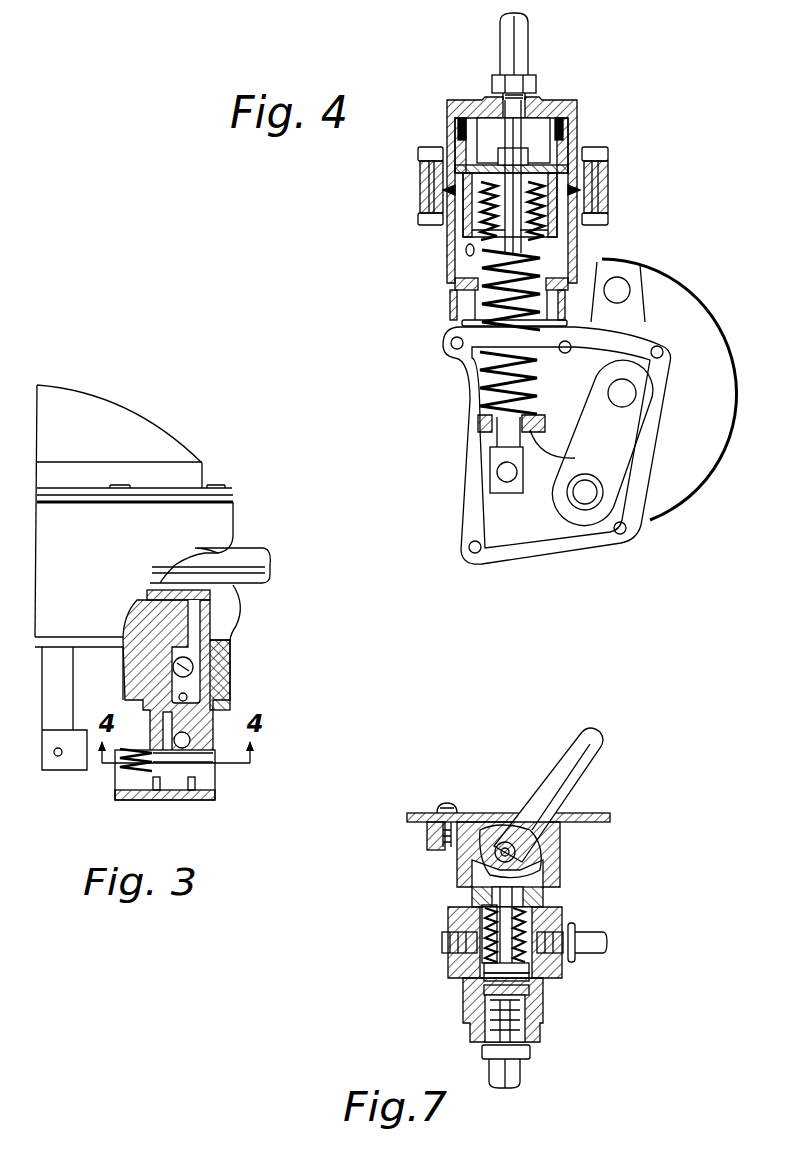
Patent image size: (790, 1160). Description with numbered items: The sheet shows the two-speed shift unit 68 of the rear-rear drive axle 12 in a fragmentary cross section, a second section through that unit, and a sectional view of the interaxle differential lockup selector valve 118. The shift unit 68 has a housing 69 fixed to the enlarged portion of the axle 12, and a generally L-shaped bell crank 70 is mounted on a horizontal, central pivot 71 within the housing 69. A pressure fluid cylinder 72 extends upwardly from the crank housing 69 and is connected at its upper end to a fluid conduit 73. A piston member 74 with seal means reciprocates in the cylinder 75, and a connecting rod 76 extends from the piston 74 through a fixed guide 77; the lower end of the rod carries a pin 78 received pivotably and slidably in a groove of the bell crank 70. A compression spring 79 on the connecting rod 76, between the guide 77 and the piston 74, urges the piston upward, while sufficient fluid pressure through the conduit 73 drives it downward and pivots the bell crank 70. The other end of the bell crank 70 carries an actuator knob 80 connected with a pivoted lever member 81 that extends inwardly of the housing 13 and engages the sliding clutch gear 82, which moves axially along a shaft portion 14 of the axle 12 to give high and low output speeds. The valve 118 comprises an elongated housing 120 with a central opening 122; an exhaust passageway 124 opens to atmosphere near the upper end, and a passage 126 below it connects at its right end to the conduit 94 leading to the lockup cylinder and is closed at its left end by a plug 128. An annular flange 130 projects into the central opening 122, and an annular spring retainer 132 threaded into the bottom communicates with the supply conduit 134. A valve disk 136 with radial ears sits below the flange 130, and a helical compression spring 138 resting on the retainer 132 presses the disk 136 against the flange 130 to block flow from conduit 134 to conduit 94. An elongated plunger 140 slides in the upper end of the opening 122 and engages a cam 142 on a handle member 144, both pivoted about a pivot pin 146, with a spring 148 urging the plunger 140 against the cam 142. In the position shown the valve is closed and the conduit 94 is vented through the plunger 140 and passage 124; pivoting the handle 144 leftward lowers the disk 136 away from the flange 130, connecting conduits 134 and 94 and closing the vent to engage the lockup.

In FIG. 3, the rear-rear drive axle 12 is at (162, 423).
In FIG. 3, the housing 13 is at (222, 515).
In FIG. 3, the shaft portion 14 is at (248, 553).
In FIG. 4, the shift unit 68 is at (614, 172).
In FIG. 3, the shift unit 68 is at (108, 793).
In FIG. 4, the housing 69 is at (470, 388).
In FIG. 3, the housing 69 is at (212, 730).
In FIG. 4, the bell crank 70 is at (615, 453).
In FIG. 4, the pivot 71 is at (588, 500).
In FIG. 4, the pressure fluid cylinder 72 is at (578, 115).
In FIG. 4, the fluid conduit 73 is at (530, 42).
In FIG. 4, the piston member 74 is at (556, 157).
In FIG. 4, the cylinder 75 is at (560, 236).
In FIG. 4, the connecting rod 76 is at (470, 245).
In FIG. 4, the fixed guide 77 is at (480, 425).
In FIG. 4, the pin 78 is at (496, 478).
In FIG. 4, the compression spring 79 is at (452, 289).
In FIG. 3, the actuator knob 80 is at (215, 765).
In FIG. 3, the lever member 81 is at (198, 652).
In FIG. 3, the sliding clutch gear 82 is at (210, 596).
In FIG. 7, the conduit 94 is at (604, 947).
In FIG. 7, the valve 118 is at (568, 900).
In FIG. 7, the housing 120 is at (563, 918).
In FIG. 7, the central opening 122 is at (486, 905).
In FIG. 7, the exhaust passageway 124 is at (478, 892).
In FIG. 7, the passage 126 is at (540, 985).
In FIG. 7, the plug 128 is at (445, 940).
In FIG. 7, the annular flange 130 is at (490, 966).
In FIG. 7, the spring retainer 132 is at (470, 1038).
In FIG. 7, the supply conduit 134 is at (522, 1080).
In FIG. 7, the valve disk 136 is at (545, 1000).
In FIG. 7, the helical compression spring 138 is at (470, 1003).
In FIG. 7, the plunger 140 is at (560, 887).
In FIG. 7, the cam 142 is at (556, 862).
In FIG. 7, the handle member 144 is at (584, 757).
In FIG. 7, the pivot pin 146 is at (515, 845).
In FIG. 7, the spring 148 is at (490, 930).